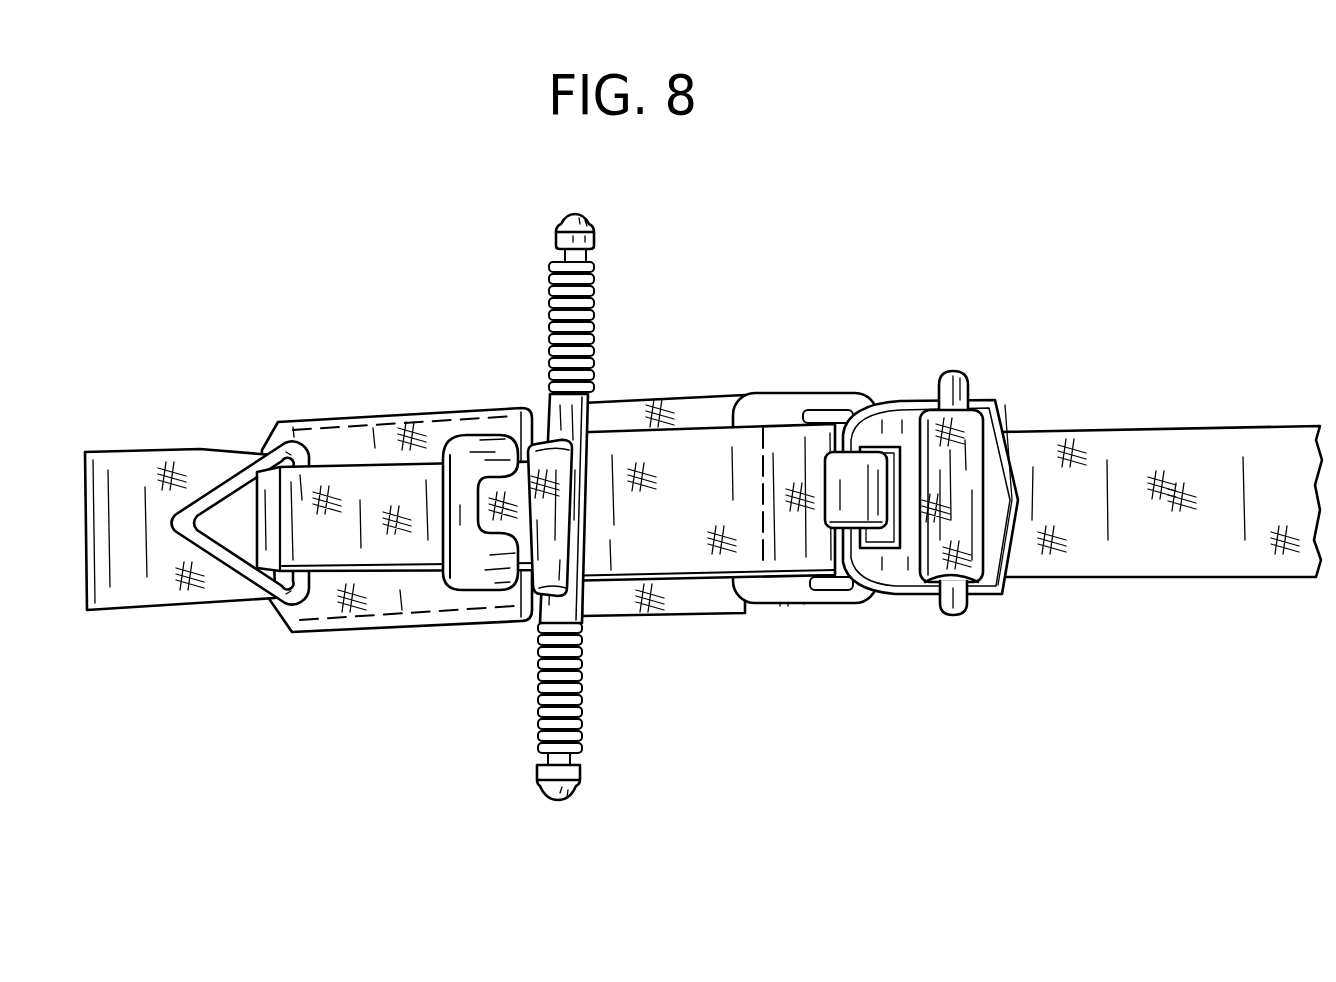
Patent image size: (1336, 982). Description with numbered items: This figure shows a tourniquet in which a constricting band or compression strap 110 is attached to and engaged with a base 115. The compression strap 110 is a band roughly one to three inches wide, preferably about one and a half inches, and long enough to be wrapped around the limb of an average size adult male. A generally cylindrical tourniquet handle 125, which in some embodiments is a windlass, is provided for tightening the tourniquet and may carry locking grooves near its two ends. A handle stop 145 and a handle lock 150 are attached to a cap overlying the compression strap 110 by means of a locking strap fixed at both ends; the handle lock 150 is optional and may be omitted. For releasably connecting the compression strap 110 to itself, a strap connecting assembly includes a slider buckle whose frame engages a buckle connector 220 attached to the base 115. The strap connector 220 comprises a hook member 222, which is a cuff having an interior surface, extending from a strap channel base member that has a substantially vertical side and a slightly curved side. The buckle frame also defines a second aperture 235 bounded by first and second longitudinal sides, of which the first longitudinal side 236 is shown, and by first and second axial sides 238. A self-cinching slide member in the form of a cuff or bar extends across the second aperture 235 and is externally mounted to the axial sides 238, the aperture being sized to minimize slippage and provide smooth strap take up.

The compression strap 110 is at (1053, 440).
The base 115 is at (313, 635).
The tourniquet handle 125 is at (596, 318).
The handle stop 145 is at (492, 457).
The handle lock 150 is at (236, 482).
The buckle connector 220 is at (832, 608).
The hook member 222 is at (852, 473).
The second aperture 235 is at (952, 385).
The first longitudinal side 236 is at (1013, 553).
The first and second axial sides 238 is at (985, 606).